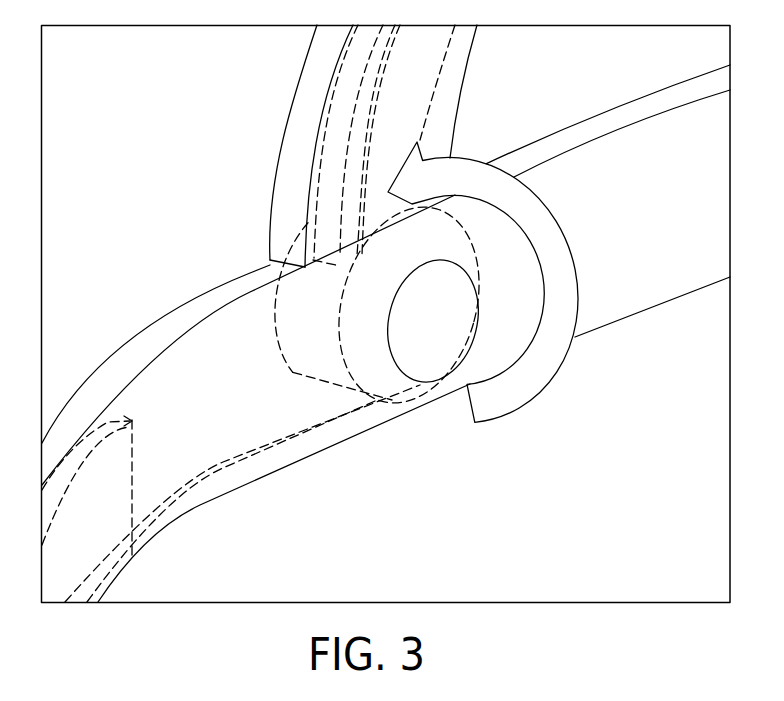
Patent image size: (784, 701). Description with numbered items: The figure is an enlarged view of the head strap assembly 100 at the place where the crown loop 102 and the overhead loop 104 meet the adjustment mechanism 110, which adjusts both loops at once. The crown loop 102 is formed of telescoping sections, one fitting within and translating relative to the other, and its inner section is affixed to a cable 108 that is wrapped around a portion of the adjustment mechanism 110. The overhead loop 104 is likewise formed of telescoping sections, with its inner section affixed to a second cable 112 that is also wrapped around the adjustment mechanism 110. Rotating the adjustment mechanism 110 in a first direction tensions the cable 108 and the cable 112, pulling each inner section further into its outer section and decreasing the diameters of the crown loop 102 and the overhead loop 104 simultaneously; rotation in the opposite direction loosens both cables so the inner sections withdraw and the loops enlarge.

The head-mounted display headband assembly 100 is at (183, 128).
The crown loop 102 is at (628, 117).
The overhead loop 104 is at (303, 130).
The cable 108 is at (225, 463).
The adjustment mechanism 110 is at (273, 312).
The cable 112 is at (392, 57).